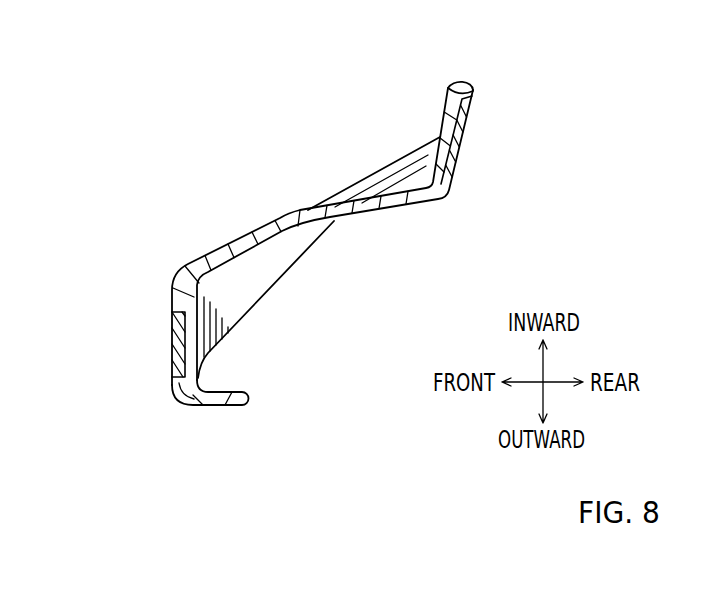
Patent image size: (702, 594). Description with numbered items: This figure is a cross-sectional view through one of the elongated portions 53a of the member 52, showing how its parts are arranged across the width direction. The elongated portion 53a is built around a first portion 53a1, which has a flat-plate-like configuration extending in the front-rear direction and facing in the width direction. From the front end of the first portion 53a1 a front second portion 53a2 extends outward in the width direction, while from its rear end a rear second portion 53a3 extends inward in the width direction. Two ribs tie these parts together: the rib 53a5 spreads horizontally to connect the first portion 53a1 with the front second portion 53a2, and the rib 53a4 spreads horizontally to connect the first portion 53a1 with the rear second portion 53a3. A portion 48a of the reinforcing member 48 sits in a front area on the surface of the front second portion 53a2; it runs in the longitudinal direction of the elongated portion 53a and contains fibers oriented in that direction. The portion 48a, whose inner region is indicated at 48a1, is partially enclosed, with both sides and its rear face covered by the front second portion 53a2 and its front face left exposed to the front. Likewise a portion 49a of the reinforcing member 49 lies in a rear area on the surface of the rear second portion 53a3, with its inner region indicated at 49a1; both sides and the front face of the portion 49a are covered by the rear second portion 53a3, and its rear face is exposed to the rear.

The seal member 52 is at (112, 124).
The elongated portion 53a is at (151, 240).
The first portion 53a1 is at (256, 234).
The front second portion 53a2 is at (211, 406).
The rear second portion 53a3 is at (463, 86).
The rib 53a4 is at (383, 177).
The rib 53a5 is at (256, 286).
The reinforcing member 49 is at (514, 141).
The portion of the reinforcing member 49a is at (478, 132).
The rear lip inner portion 49a1 is at (461, 157).
The reinforcing member 48 is at (107, 357).
The portion of the reinforcing member 48a is at (161, 334).
The front lip inner portion 48a1 is at (171, 357).